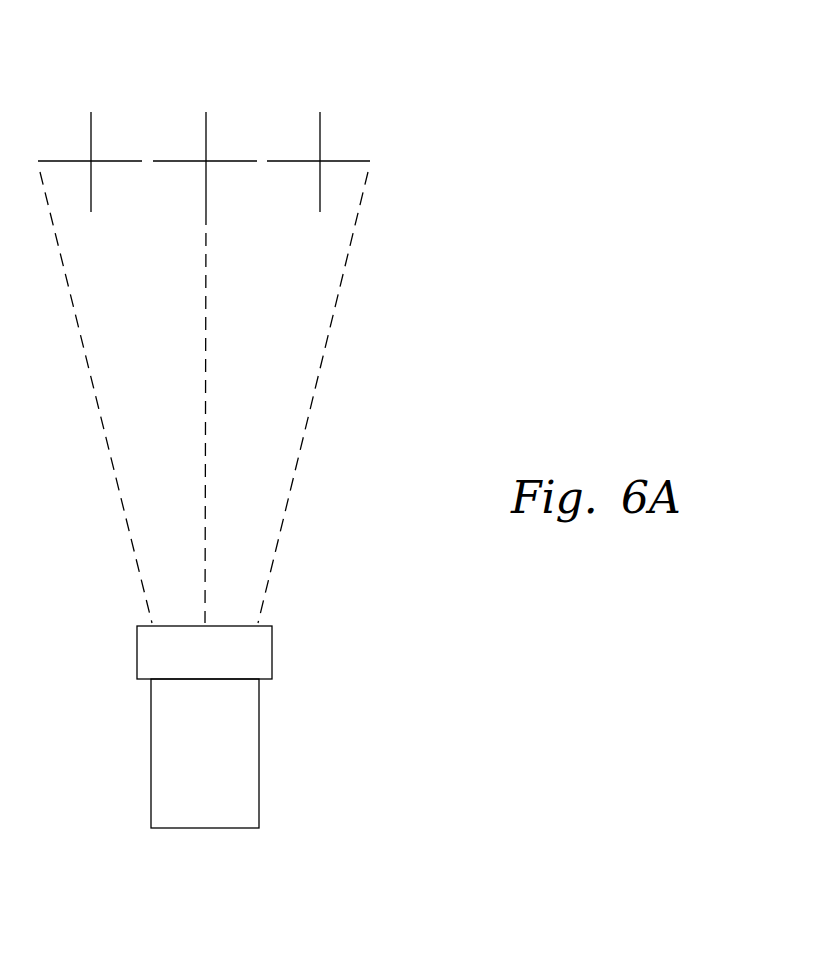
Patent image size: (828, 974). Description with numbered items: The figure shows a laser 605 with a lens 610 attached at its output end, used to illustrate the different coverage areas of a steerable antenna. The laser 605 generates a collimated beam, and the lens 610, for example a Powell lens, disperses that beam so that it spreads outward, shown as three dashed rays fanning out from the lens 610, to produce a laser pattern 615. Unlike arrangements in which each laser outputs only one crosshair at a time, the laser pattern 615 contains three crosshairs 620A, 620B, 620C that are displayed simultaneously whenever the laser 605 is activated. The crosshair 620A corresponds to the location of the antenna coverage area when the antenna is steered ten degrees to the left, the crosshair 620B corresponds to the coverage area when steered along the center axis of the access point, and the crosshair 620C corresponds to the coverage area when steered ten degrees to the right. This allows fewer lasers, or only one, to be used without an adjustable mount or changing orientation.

The laser 605 is at (259, 765).
The lens 610 is at (272, 653).
The laser pattern 615 is at (396, 90).
The crosshair 620A is at (91, 82).
The crosshair 620B is at (206, 82).
The crosshair 620C is at (320, 82).